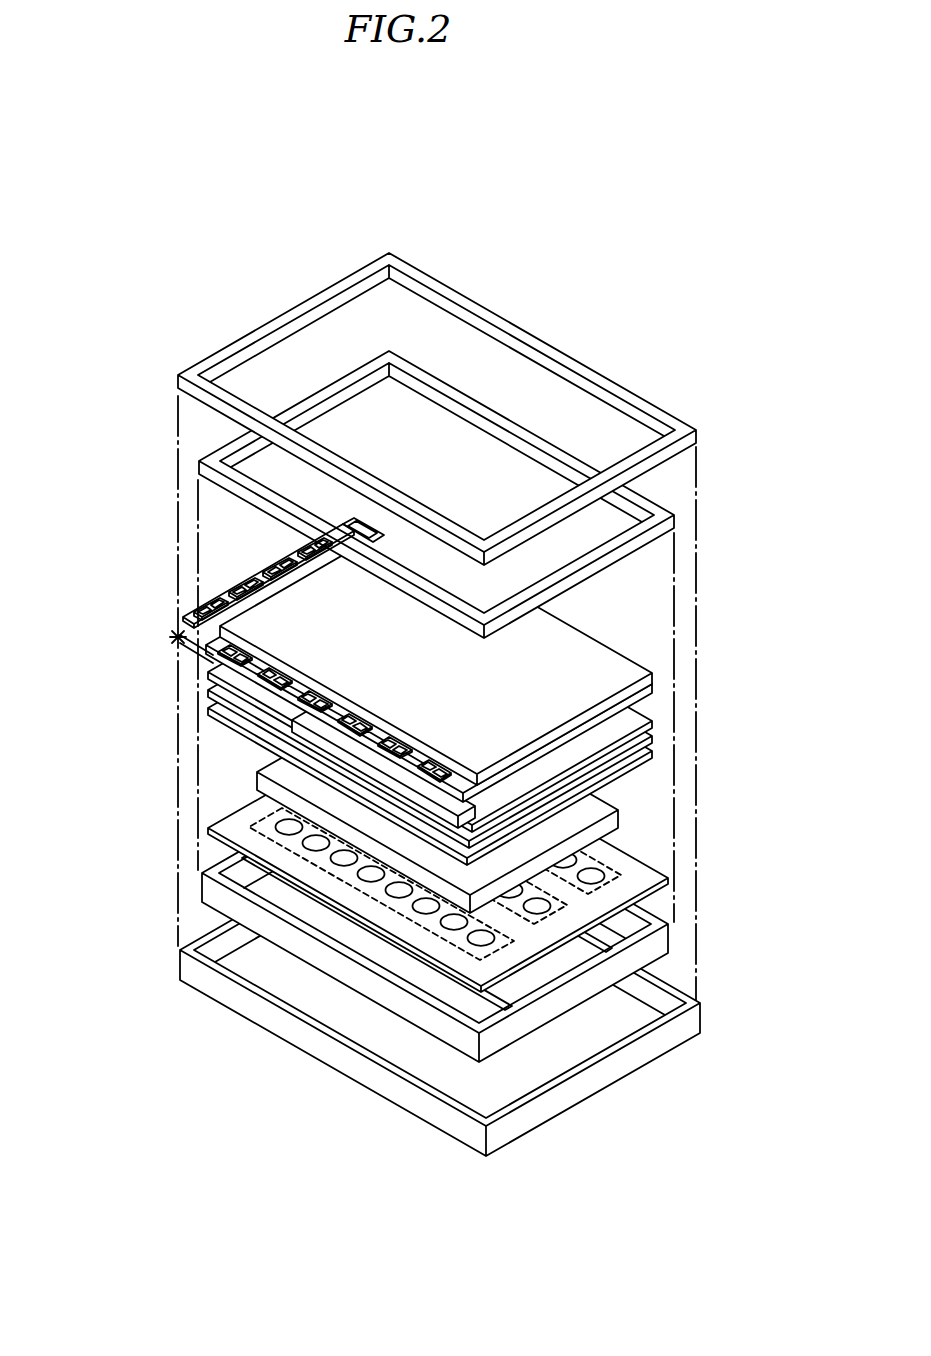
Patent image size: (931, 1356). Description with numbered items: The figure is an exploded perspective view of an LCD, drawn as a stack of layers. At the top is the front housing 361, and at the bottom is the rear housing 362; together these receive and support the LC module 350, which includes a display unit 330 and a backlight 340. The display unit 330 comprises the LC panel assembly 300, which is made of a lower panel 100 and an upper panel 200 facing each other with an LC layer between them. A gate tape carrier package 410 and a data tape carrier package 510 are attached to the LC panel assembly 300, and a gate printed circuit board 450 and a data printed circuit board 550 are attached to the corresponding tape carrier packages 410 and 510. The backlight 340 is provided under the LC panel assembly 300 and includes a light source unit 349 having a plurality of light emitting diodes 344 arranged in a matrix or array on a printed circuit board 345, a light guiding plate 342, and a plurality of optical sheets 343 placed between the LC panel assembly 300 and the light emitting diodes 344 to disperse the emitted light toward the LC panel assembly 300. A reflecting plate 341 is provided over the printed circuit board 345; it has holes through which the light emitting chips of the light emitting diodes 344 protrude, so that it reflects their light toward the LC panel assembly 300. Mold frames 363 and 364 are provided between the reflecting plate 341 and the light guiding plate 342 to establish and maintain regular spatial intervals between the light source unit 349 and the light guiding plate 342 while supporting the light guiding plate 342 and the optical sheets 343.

The lower panel 100 is at (655, 687).
The upper panel 200 is at (655, 675).
The LC panel assembly 300 is at (481, 676).
The display unit 330 is at (481, 676).
The backlight 340 is at (525, 887).
The reflecting plate 341 is at (500, 856).
The light guiding plate 342 is at (625, 818).
The optical sheets 343 is at (700, 715).
The light emitting diodes 344 is at (625, 900).
The printed circuit board 345 is at (615, 915).
The light source unit 349 is at (534, 886).
The LC module 350 is at (394, 689).
The front housing 361 is at (457, 330).
The rear housing 362 is at (587, 1075).
The mold frame 363 is at (637, 542).
The mold frame 364 is at (607, 980).
The gate tape carrier package 410 is at (283, 573).
The gate printed circuit board 450 is at (277, 568).
The data tape carrier package 510 is at (149, 627).
The data printed circuit board 550 is at (205, 683).